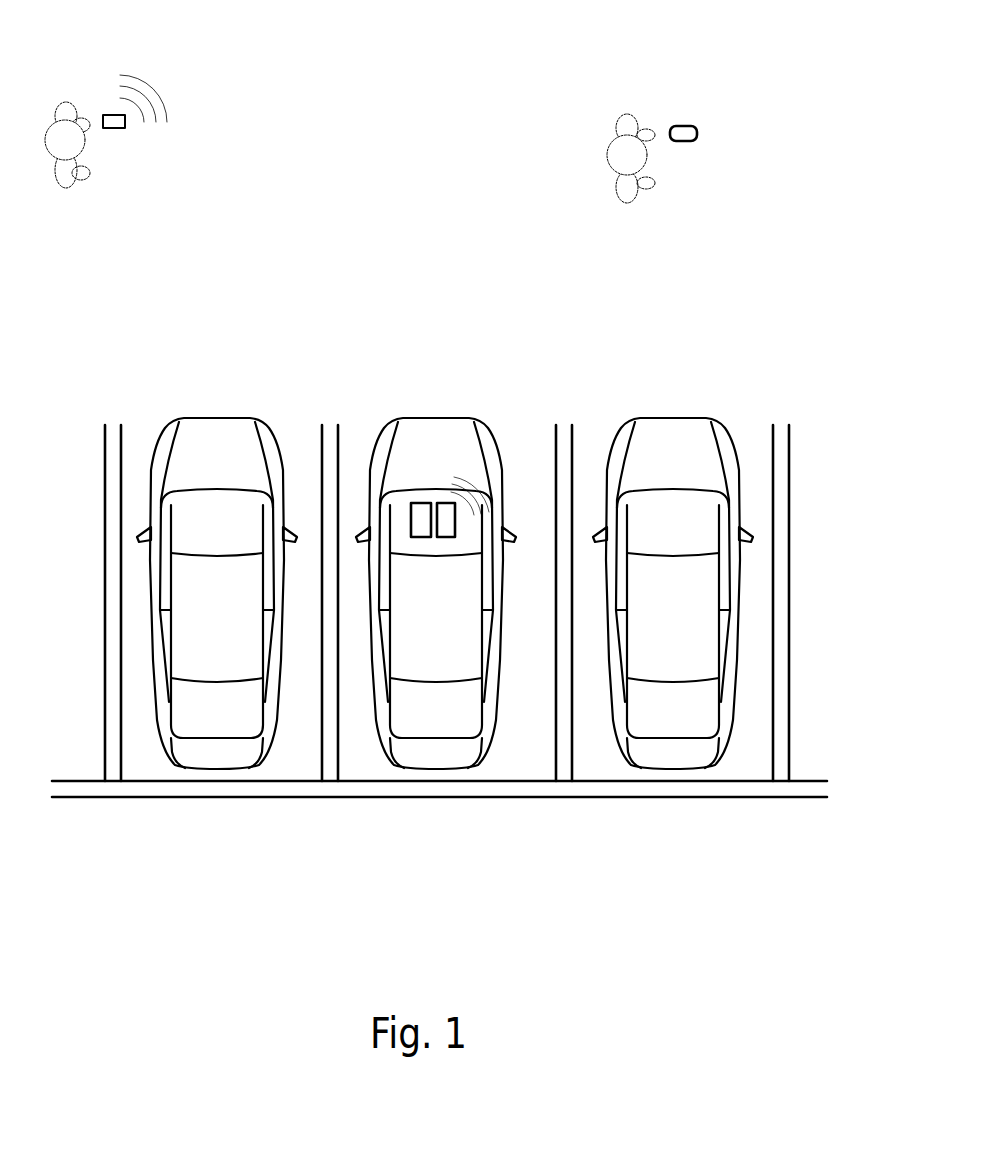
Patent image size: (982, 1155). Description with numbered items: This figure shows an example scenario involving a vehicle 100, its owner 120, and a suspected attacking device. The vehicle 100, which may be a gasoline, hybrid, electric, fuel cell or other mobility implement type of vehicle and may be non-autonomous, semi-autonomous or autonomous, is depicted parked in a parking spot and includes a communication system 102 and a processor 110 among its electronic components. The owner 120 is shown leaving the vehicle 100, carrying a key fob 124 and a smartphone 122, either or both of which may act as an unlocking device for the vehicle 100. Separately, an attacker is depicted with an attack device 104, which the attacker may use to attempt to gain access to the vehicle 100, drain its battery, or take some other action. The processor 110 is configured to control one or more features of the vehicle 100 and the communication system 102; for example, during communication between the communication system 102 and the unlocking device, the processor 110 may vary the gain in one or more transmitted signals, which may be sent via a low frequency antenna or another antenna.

The vehicle 100 is at (438, 750).
The communication system 102 is at (445, 504).
The attack device 104 is at (108, 128).
The processor 110 is at (418, 503).
The owner 120 is at (630, 135).
The smartphone 122 is at (677, 141).
The key fob 124 is at (658, 185).